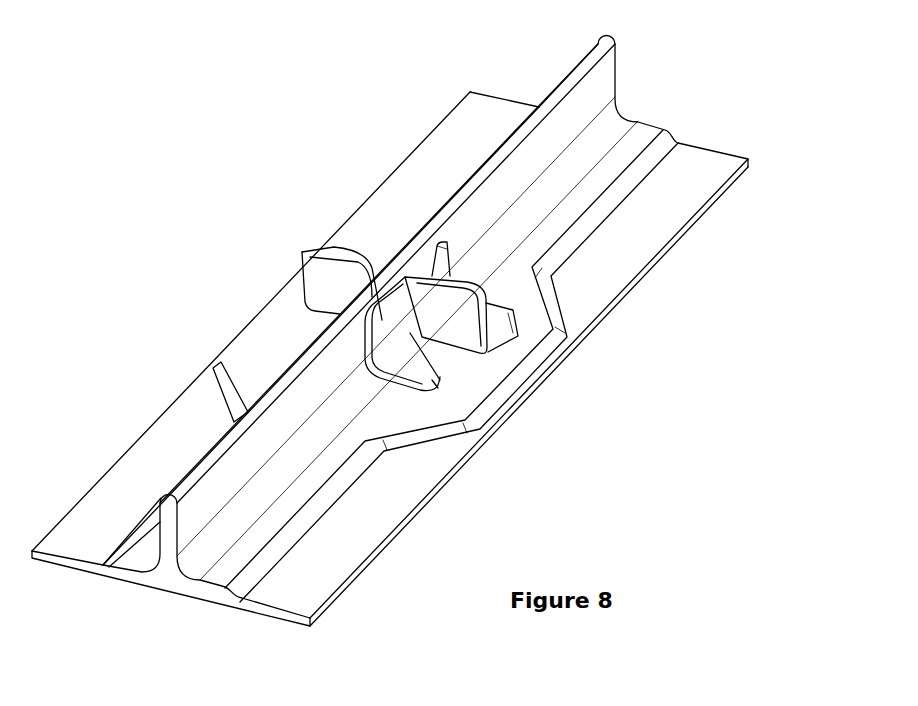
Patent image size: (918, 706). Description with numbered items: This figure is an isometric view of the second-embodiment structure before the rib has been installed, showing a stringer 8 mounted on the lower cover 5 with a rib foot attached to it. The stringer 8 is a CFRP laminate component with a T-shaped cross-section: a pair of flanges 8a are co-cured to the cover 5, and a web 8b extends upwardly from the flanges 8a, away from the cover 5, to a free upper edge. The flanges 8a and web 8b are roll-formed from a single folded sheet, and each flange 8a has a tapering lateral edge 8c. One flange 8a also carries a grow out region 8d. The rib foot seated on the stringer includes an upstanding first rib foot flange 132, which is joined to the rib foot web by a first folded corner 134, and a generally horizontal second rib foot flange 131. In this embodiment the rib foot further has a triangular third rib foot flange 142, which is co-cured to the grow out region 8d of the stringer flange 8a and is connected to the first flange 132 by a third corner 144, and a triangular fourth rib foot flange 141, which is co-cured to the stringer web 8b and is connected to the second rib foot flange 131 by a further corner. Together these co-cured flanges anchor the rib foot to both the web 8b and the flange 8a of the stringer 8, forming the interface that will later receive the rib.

The stringer 8 is at (390, 340).
The lower cover 5 is at (390, 340).
The flange 8a is at (230, 568).
The web 8b is at (180, 490).
The tapering lateral edge 8c is at (397, 440).
The grow out region 8d is at (510, 353).
The second rib foot flange 131 is at (507, 318).
The first rib foot flange 132 is at (382, 330).
The first folded corner 134 is at (403, 275).
The fourth rib foot flange 141 is at (442, 265).
The third rib foot flange 142 is at (413, 374).
The third corner 144 is at (390, 358).